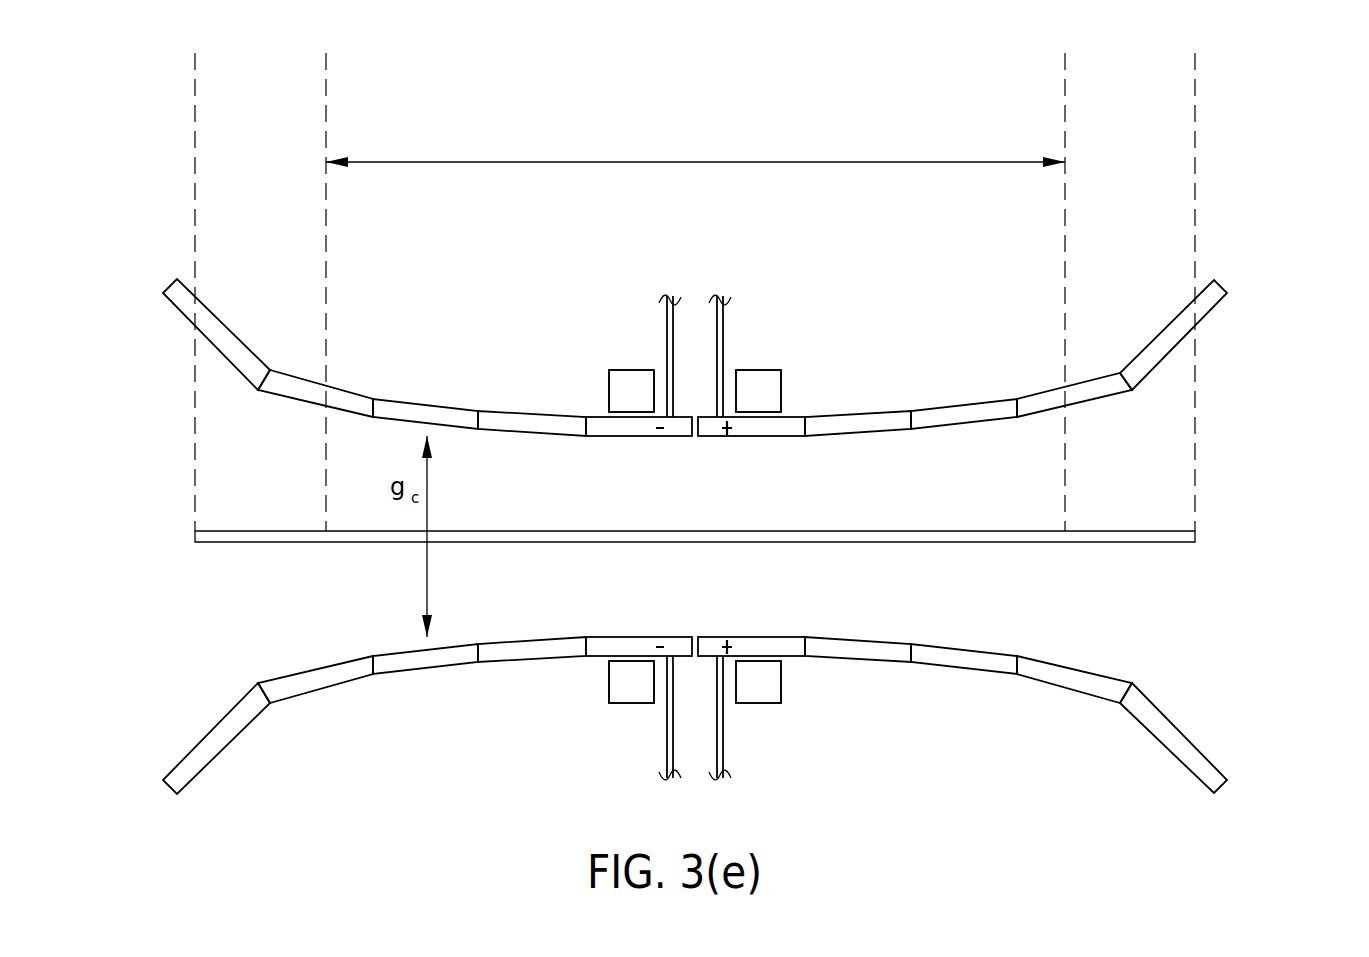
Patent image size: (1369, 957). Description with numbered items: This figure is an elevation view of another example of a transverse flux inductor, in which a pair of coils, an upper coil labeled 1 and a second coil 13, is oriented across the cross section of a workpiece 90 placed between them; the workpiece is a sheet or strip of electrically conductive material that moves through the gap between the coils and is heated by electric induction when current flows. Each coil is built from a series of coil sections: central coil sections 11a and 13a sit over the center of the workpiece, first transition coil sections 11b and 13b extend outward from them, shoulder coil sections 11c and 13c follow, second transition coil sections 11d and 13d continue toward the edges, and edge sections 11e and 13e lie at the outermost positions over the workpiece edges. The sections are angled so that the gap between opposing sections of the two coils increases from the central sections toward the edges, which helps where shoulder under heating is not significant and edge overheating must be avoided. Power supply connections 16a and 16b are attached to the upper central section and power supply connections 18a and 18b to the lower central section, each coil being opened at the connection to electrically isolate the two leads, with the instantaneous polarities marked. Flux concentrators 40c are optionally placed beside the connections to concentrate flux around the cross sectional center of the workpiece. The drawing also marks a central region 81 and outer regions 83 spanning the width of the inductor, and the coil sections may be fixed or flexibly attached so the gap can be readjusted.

The top electrode assembly 1 is at (1265, 270).
The second coil 13 is at (140, 720).
The central coil section 11a is at (618, 425).
The first transition coil section 11b is at (517, 420).
The shoulder coil section 11c is at (427, 415).
The second transition coil section 11d is at (308, 387).
The edge section 11e is at (212, 333).
The central coil section 13a is at (755, 645).
The first transition coil section 13b is at (533, 655).
The shoulder coil section 13c is at (450, 660).
The second transition coil section 13d is at (321, 677).
The edge section 13e is at (212, 742).
The power supply connection 16a is at (720, 352).
The power supply connection 16b is at (672, 352).
The power supply connection 18a is at (718, 734).
The power supply connection 18b is at (672, 734).
The flux concentrator 40c is at (622, 392).
The workpiece 90 is at (1185, 536).
The region 81 is at (695, 182).
The region 83 is at (142, 81).